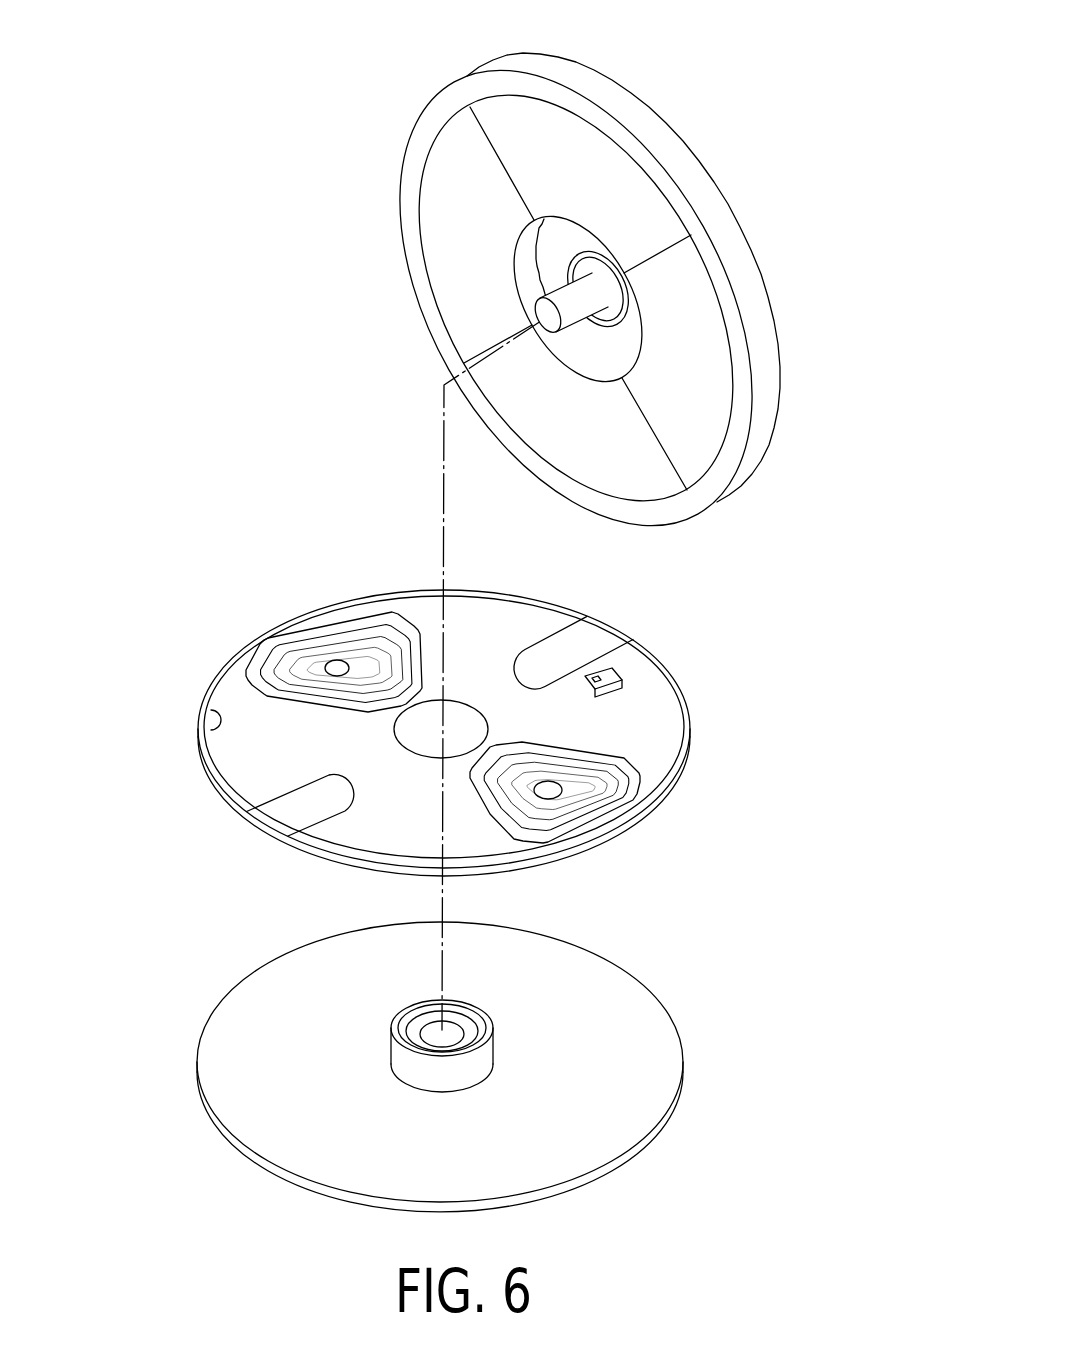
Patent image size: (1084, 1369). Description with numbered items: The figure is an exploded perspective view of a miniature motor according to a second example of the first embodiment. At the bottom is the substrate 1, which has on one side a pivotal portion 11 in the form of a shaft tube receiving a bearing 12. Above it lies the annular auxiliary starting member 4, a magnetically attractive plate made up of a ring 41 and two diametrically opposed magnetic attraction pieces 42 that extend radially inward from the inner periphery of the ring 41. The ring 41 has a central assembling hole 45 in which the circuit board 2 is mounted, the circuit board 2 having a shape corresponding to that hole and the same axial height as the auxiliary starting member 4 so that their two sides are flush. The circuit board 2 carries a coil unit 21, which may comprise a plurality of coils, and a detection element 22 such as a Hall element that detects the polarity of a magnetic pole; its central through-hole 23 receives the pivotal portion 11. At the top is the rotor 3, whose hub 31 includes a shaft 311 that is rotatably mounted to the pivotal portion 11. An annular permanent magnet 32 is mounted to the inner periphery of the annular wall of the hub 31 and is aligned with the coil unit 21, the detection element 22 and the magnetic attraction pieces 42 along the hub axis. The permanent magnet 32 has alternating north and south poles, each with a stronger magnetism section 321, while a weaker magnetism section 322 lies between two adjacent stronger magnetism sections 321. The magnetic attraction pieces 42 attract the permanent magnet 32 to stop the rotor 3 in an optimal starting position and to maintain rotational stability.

The substrate 1 is at (253, 1008).
The pivotal portion 11 is at (483, 1063).
The bearing 12 is at (470, 1027).
The circuit board 2 is at (248, 762).
The coil unit 21 is at (634, 767).
The detection element 22 is at (625, 676).
The central through-hole 23 is at (428, 710).
The rotor 3 is at (720, 168).
The hub 31 is at (712, 213).
The shaft 311 is at (553, 312).
The permanent magnet 32 is at (725, 323).
The stronger magnetism section 321 is at (580, 197).
The weaker magnetism section 322 is at (500, 165).
The auxiliary starting member 4 is at (285, 612).
The ring 41 is at (223, 677).
The magnetic attraction pieces 42 is at (557, 657).
The central assembling hole 45 is at (213, 711).